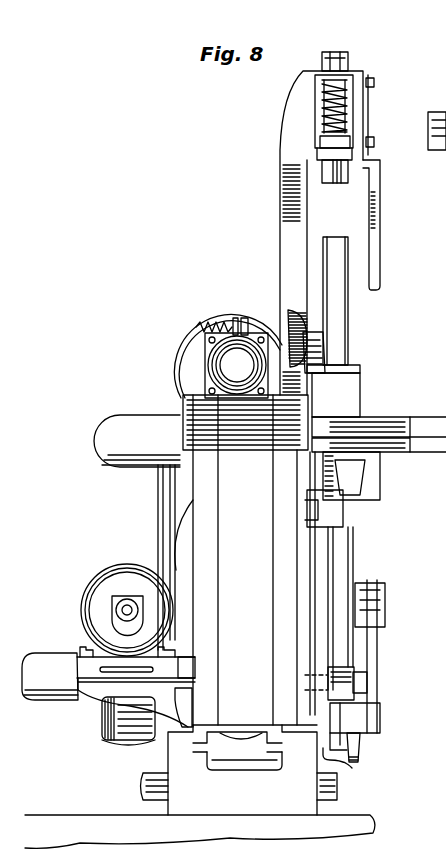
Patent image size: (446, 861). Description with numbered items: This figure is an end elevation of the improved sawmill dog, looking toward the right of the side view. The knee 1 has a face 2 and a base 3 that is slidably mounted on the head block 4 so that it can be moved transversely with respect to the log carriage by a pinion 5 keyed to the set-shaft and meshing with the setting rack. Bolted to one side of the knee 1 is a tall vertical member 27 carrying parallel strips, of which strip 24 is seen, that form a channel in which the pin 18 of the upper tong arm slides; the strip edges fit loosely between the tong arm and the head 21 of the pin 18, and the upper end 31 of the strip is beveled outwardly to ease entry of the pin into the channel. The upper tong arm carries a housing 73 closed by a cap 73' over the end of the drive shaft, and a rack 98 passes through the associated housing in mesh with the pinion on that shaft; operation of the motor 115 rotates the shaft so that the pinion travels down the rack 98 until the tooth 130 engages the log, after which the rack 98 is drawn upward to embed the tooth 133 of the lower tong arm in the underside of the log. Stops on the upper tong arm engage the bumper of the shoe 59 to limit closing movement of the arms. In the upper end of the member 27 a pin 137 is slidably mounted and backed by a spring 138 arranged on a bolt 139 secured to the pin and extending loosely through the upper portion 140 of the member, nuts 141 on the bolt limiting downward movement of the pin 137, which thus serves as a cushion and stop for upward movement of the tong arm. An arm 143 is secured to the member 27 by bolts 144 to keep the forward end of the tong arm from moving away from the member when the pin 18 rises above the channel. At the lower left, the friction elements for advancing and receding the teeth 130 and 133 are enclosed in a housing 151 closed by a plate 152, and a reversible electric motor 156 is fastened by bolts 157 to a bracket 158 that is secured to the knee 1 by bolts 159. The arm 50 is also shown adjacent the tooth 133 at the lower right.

The knee 1 is at (190, 492).
The face 2 is at (222, 540).
The base 3 is at (229, 770).
The head block 4 is at (312, 807).
The pinion 5 is at (437, 232).
The pin 18 is at (322, 522).
The head 21 is at (318, 512).
The strip 24 is at (318, 578).
The vertical member 27 is at (290, 229).
The upper end of strip 31 is at (320, 358).
The lever arm 50 is at (376, 660).
The shoe 59 is at (350, 684).
The housing 73 is at (241, 338).
The cap 73' is at (130, 426).
The rack 98 is at (350, 305).
The motor 115 is at (190, 350).
The tooth 130 is at (368, 494).
The tooth 133 is at (360, 752).
The pin 137 is at (335, 183).
The spring 138 is at (323, 108).
The bolt 139 is at (345, 76).
The upper portion 140 is at (328, 63).
The nuts 141 is at (335, 53).
The arm 143 is at (378, 195).
The bolts 144 is at (375, 84).
The housing 151 is at (110, 752).
The plate 152 is at (100, 710).
The reversible electric motor 156 is at (112, 586).
The bolts 157 is at (85, 648).
The bracket 158 is at (133, 693).
The bolts 159 is at (182, 713).